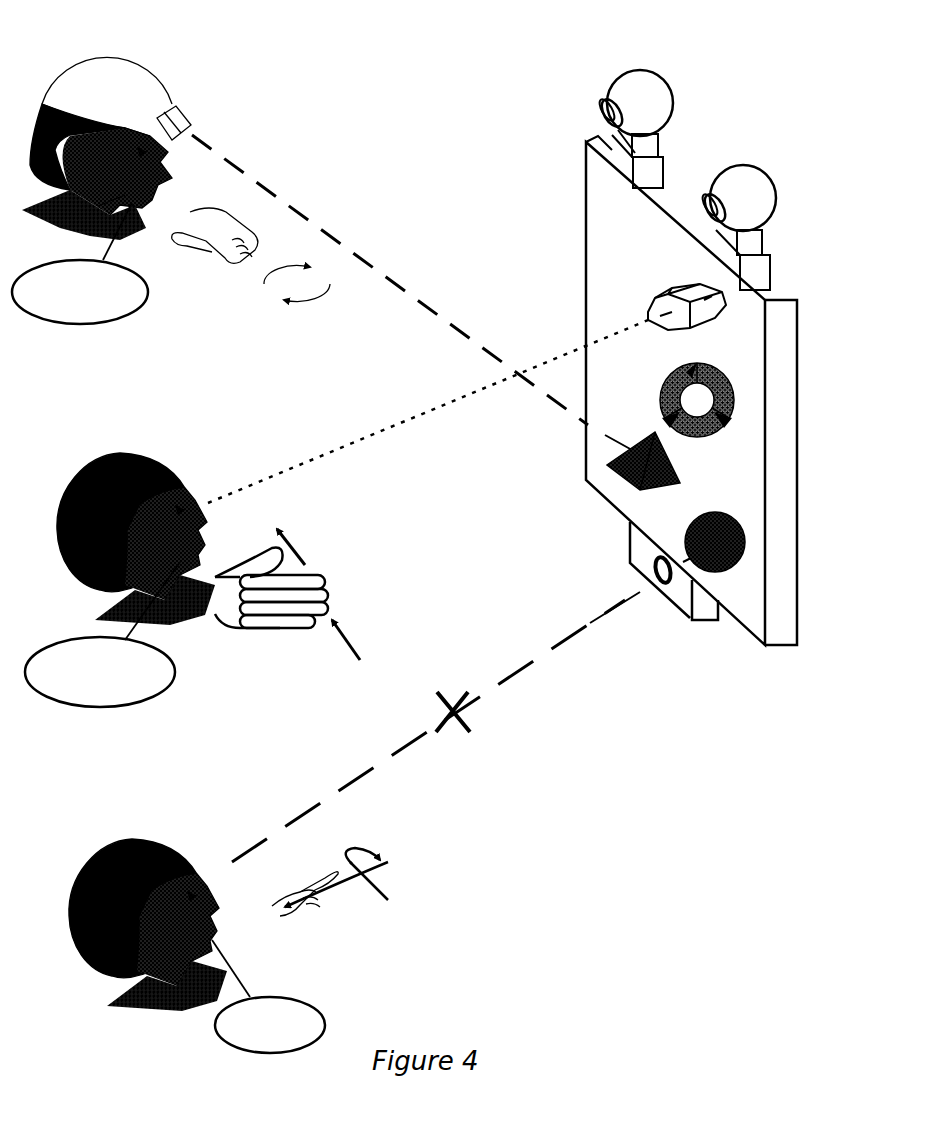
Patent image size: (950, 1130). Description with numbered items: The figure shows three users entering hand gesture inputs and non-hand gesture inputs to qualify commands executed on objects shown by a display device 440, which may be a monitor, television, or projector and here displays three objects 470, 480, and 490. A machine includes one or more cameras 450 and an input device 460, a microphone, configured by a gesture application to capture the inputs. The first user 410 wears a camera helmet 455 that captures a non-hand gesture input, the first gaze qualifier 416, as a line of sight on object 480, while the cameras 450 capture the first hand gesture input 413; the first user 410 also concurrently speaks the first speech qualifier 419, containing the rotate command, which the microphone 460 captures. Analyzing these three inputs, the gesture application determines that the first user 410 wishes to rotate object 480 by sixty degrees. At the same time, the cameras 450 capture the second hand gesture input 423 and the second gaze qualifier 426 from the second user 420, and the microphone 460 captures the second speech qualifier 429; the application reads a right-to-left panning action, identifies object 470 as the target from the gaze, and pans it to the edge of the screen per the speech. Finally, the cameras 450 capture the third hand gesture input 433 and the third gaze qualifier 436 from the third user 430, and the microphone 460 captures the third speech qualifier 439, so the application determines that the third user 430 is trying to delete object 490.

The user 1 410 is at (74, 44).
The camera helmet 455 is at (140, 61).
The gaze qualifier 1 416 is at (203, 123).
The hand gesture 1 input 413 is at (245, 200).
The speech qualifier 1 419 is at (90, 326).
The user 2 420 is at (80, 471).
The gaze qualifier 2 426 is at (270, 466).
The hand gesture 2 input 423 is at (428, 580).
The speech qualifier 2 429 is at (150, 705).
The user 3 430 is at (72, 879).
The gaze qualifier 3 436 is at (231, 850).
The hand gesture 3 input 433 is at (502, 881).
The speech qualifier 3 439 is at (370, 996).
The display device 440 is at (752, 633).
The cameras 450 is at (742, 160).
The input device 460 is at (650, 568).
The object 470 is at (677, 270).
The object 480 is at (652, 426).
The object 490 is at (737, 512).